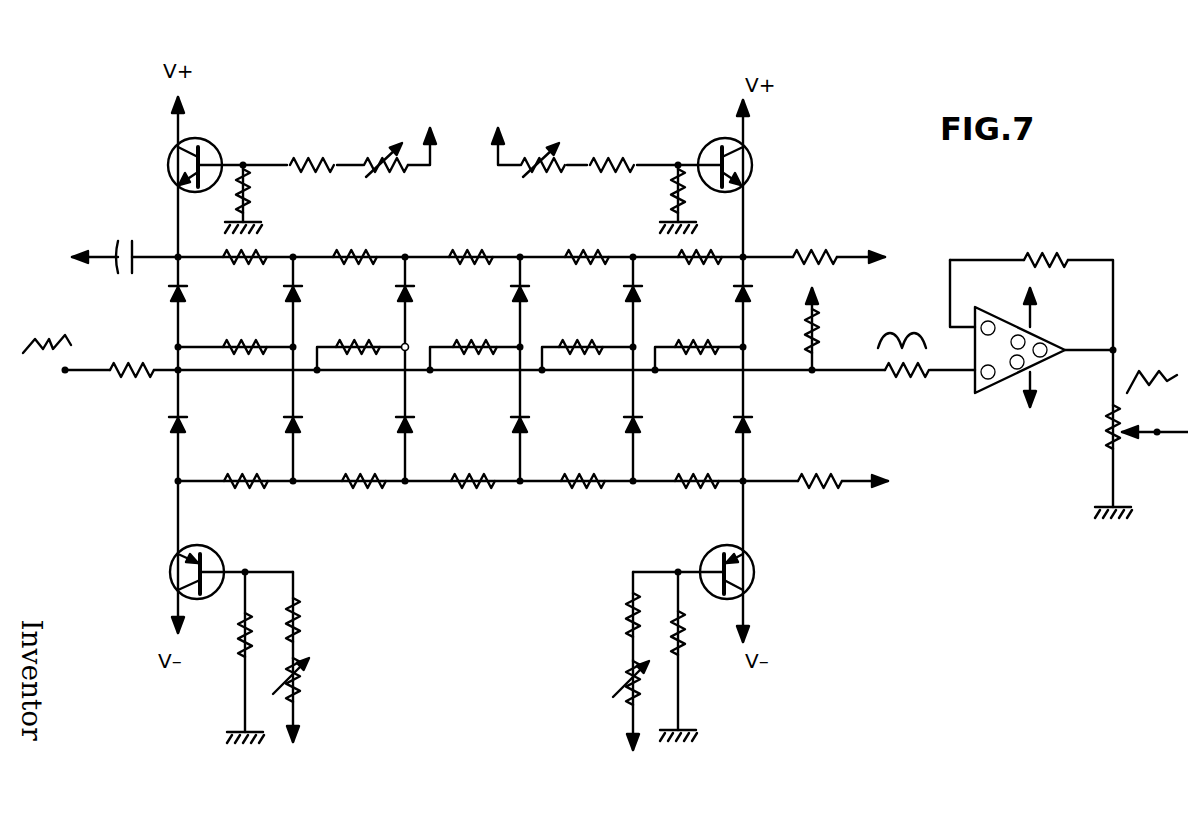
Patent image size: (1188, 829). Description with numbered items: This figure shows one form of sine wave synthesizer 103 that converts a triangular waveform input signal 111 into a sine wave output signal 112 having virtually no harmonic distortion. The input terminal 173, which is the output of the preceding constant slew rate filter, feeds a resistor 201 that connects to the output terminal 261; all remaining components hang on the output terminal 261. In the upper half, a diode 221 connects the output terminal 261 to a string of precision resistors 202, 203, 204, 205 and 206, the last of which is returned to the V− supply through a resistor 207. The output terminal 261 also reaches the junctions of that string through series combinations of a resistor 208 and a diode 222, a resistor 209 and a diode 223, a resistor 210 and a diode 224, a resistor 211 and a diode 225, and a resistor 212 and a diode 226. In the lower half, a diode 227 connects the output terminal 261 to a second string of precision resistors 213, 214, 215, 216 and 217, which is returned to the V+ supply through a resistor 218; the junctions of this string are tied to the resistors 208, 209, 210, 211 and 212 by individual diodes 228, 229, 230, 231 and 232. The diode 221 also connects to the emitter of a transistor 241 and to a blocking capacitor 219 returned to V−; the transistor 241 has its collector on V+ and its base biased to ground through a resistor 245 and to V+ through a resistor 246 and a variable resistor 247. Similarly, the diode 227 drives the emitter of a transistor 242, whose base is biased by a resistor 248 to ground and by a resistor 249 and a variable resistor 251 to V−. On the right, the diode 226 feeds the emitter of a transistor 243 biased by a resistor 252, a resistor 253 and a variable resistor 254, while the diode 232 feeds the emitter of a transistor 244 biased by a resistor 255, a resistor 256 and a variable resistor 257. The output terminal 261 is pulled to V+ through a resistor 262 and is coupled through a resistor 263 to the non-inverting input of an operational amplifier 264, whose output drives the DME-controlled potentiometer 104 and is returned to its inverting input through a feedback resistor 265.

The sine wave synthesizer 103 is at (505, 571).
The DME-controlled potentiometer 104 is at (1110, 450).
The triangular waveform input signal 111 is at (50, 338).
The sine wave output signal 112 is at (1145, 374).
The input terminal 173 is at (65, 374).
The resistor 201 is at (125, 375).
The precision resistor 202 is at (270, 257).
The precision resistor 203 is at (372, 257).
The precision resistor 204 is at (466, 257).
The precision resistor 205 is at (590, 257).
The precision resistor 206 is at (710, 257).
The resistor 207 is at (805, 257).
The resistor 208 is at (254, 345).
The resistor 209 is at (372, 345).
The resistor 210 is at (485, 345).
The resistor 211 is at (592, 345).
The resistor 212 is at (706, 345).
The precision resistor 213 is at (247, 483).
The precision resistor 214 is at (362, 483).
The precision resistor 215 is at (462, 483).
The precision resistor 216 is at (578, 483).
The precision resistor 217 is at (686, 483).
The resistor 218 is at (815, 483).
The blocking capacitor 219 is at (116, 243).
The diode 221 is at (170, 300).
The diode 222 is at (282, 296).
The diode 223 is at (395, 296).
The diode 224 is at (510, 294).
The diode 225 is at (623, 294).
The diode 226 is at (733, 294).
The diode 227 is at (186, 424).
The diode 228 is at (300, 424).
The diode 229 is at (412, 424).
The diode 230 is at (527, 424).
The diode 231 is at (640, 424).
The diode 232 is at (750, 424).
The transistor 241 is at (211, 142).
The transistor 242 is at (173, 592).
The transistor 243 is at (747, 153).
The transistor 244 is at (752, 585).
The resistor 245 is at (250, 196).
The resistor 246 is at (310, 158).
The variable resistor 247 is at (372, 160).
The resistor 248 is at (243, 668).
The resistor 249 is at (296, 605).
The variable resistor 251 is at (298, 698).
The resistor 252 is at (672, 200).
The resistor 253 is at (615, 160).
The variable resistor 254 is at (526, 160).
The resistor 255 is at (681, 668).
The resistor 256 is at (630, 615).
The variable resistor 257 is at (625, 705).
The output terminal 261 is at (218, 372).
The resistor 262 is at (815, 340).
The resistor 263 is at (905, 375).
The operational amplifier 264 is at (1000, 395).
The feedback resistor 265 is at (1045, 257).